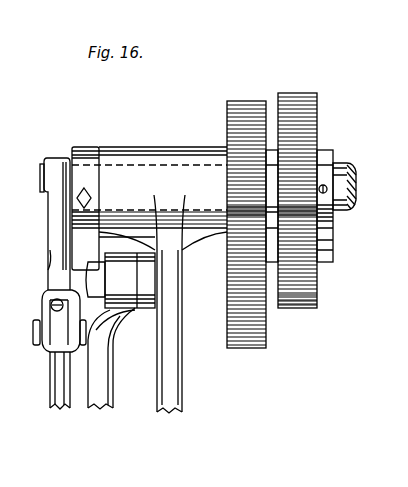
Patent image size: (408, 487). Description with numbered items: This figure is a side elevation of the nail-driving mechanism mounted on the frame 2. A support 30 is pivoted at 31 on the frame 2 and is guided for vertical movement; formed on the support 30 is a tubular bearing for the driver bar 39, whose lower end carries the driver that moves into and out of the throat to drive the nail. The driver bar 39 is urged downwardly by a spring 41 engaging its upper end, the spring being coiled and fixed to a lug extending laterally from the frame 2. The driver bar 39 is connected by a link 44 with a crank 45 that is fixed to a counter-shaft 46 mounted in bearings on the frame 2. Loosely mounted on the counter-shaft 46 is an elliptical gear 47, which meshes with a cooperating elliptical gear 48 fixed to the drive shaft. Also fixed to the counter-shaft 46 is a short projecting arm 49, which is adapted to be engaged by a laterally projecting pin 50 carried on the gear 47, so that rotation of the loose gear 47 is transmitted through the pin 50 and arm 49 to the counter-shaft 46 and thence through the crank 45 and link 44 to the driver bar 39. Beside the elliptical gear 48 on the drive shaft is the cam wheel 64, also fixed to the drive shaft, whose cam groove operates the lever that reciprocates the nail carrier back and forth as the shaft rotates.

The frame 2 is at (170, 373).
The support 30 is at (100, 405).
The pivot 31 is at (76, 302).
The driver bar 39 is at (60, 405).
The spring 41 is at (52, 292).
The link 44 is at (56, 242).
The crank 45 is at (80, 146).
The counter-shaft 46 is at (356, 205).
The elliptical gear 47 is at (305, 308).
The elliptical gear 48 is at (297, 100).
The projecting arm 49 is at (329, 150).
The pin 50 is at (332, 225).
The cam wheel 64 is at (226, 112).